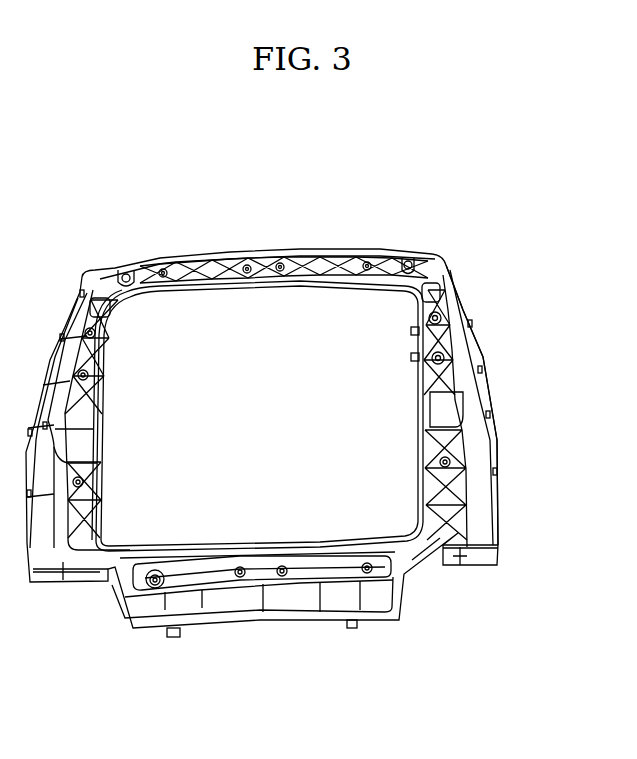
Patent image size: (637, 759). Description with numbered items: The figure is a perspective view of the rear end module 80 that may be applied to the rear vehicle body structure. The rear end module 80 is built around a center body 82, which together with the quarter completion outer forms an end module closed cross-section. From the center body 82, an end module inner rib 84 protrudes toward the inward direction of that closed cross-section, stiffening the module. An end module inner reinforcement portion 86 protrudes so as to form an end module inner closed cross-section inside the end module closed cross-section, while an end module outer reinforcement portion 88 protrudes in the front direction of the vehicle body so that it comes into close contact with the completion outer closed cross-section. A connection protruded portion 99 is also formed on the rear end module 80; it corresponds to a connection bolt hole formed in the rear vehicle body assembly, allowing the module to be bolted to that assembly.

The rear end module 80 is at (296, 646).
The center body 82 is at (438, 333).
The end module inner rib 84 is at (457, 379).
The end module inner reinforcement portion 86 is at (418, 421).
The end module outer reinforcement portion 88 is at (485, 498).
The connection protruded portion 99 is at (415, 357).